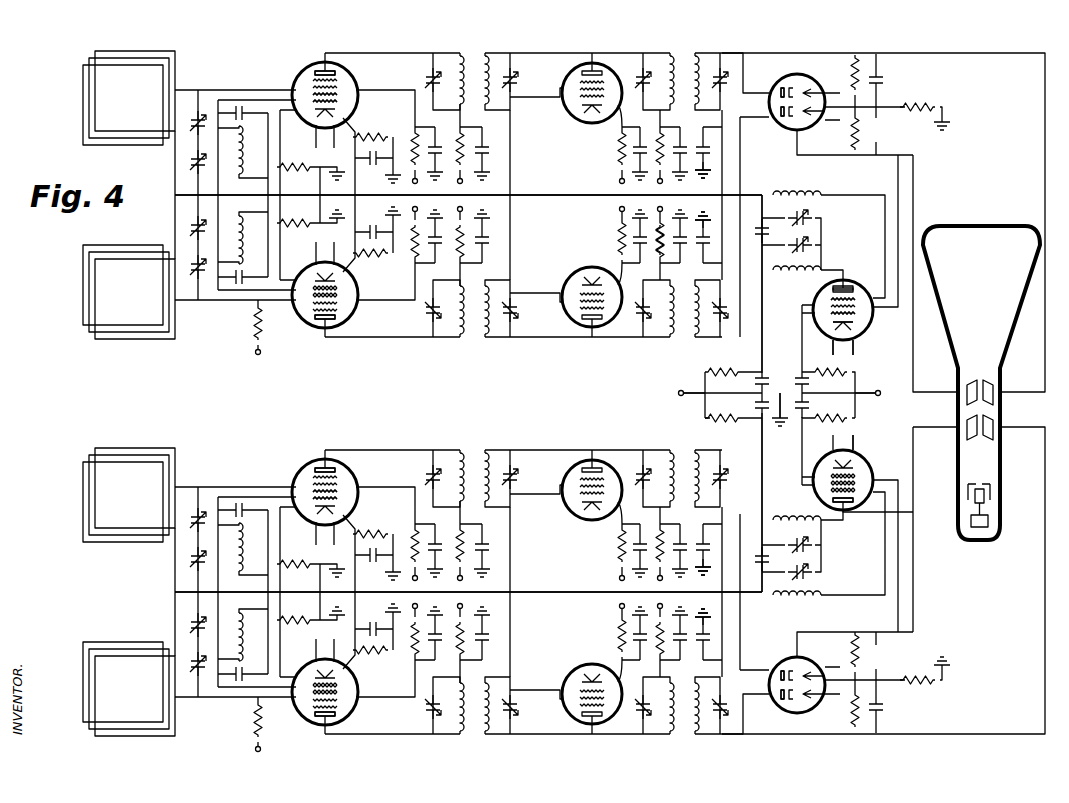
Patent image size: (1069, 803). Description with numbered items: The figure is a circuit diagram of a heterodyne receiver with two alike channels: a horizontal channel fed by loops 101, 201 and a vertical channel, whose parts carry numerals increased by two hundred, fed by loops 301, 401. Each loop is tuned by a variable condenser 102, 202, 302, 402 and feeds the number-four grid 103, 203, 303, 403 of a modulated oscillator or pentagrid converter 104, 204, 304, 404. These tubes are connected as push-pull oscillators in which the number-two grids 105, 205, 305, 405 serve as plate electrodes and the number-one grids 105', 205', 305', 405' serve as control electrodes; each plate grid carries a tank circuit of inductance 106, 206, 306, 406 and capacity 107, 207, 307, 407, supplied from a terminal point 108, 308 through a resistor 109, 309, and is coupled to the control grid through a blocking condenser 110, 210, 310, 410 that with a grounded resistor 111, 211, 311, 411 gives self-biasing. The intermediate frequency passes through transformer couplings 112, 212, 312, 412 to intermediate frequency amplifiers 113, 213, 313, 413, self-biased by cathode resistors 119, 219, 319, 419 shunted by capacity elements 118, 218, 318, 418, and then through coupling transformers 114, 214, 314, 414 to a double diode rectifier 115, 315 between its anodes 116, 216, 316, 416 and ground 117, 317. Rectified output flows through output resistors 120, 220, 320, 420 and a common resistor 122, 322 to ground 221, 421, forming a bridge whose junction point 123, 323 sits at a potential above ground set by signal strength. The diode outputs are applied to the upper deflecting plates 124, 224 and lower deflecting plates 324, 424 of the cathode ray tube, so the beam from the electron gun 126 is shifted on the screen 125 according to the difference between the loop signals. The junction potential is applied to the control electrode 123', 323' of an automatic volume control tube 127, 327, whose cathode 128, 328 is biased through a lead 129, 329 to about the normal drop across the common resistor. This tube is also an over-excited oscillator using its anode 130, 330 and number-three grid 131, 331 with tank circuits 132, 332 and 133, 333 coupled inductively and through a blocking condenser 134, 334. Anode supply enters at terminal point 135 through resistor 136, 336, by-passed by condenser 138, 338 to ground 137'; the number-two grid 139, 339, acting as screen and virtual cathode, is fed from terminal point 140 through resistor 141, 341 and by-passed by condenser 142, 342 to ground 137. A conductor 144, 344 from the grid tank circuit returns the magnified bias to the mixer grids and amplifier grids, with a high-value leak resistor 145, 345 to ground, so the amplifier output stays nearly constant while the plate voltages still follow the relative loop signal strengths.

The loop 101 is at (83, 87).
The variable condenser 102 is at (195, 121).
The No. 4 grid 103 is at (300, 78).
The modulated oscillator 104 is at (343, 74).
The No. 2 grid 105 is at (352, 100).
The No. 1 grid 105' is at (353, 110).
The inductance element 106 is at (256, 150).
The capacity element 107 is at (196, 160).
The terminal point 108 is at (262, 352).
The resistor 109 is at (262, 328).
The blocking or coupling condenser 110 is at (243, 118).
The resistor 111 is at (308, 160).
The transformer coupling 112 is at (471, 53).
The intermediate frequency amplifier 113 is at (578, 66).
The coupling transformer 114 is at (683, 53).
The double diode rectifier 115 is at (812, 80).
The anode electrode 116 is at (775, 85).
The ground 117 is at (703, 176).
The capacity element 118 is at (640, 136).
The resistor element 119 is at (618, 155).
The output resistor 120 is at (855, 62).
The common resistor 122 is at (920, 103).
The junction point 123 is at (887, 87).
The control electrode 123' is at (870, 322).
The deflecting plate 124 is at (995, 398).
The target or screen 125 is at (985, 232).
The electron gun structure 126 is at (992, 492).
The automatic volume control tube 127 is at (818, 322).
The cathode 128 is at (833, 340).
The conductor or lead 129 is at (860, 348).
The plate or anode electrode 130 is at (852, 283).
The No. 3 grid 131 is at (833, 289).
The tank circuit 132 is at (821, 262).
The tank circuit 133 is at (821, 212).
The blocking condenser 134 is at (812, 243).
The terminal point 135 is at (678, 396).
The resistor 136 is at (731, 361).
The ground 137 is at (672, 250).
The ground 137' is at (781, 424).
The condenser 138 is at (758, 390).
The No. 2 grid 139 is at (815, 300).
The terminal point 140 is at (882, 399).
The resistor 141 is at (852, 372).
The condenser 142 is at (810, 386).
The conductor 144 is at (762, 195).
The resistor 145 is at (706, 245).
The loop 201 is at (83, 287).
The variable condenser 202 is at (194, 270).
The No. 4 grid 203 is at (300, 305).
The modulated oscillator 204 is at (350, 312).
The No. 2 grid 205 is at (352, 291).
The No. 1 grid 205' is at (353, 276).
The inductance element 206 is at (230, 240).
The capacity element 207 is at (196, 230).
The blocking or coupling condenser 210 is at (245, 285).
The resistor 211 is at (308, 220).
The transformer coupling 212 is at (477, 337).
The intermediate frequency amplifier 213 is at (578, 330).
The coupling transformer 214 is at (680, 337).
The anode electrode 216 is at (778, 125).
The capacity element 218 is at (640, 254).
The resistor element 219 is at (618, 236).
The output resistor 220 is at (855, 140).
The ground 221 is at (948, 128).
The deflecting plate 224 is at (967, 396).
The loop 301 is at (83, 487).
The variable condenser 302 is at (195, 519).
The No. 4 grid 303 is at (300, 480).
The modulated oscillator 304 is at (343, 473).
The No. 2 grid 305 is at (352, 497).
The No. 1 grid 305' is at (353, 508).
The inductance element 306 is at (243, 545).
The capacity element 307 is at (196, 562).
The terminal point 308 is at (262, 748).
The resistor 309 is at (262, 724).
The blocking or coupling condenser 310 is at (245, 505).
The resistor 311 is at (295, 566).
The transformer coupling 312 is at (471, 450).
The intermediate frequency amplifier 313 is at (578, 464).
The coupling transformer 314 is at (683, 450).
The double diode rectifier 315 is at (800, 668).
The anode electrode 316 is at (773, 668).
The ground 317 is at (703, 574).
The capacity element 318 is at (640, 534).
The resistor element 319 is at (618, 553).
The output resistor 320 is at (855, 640).
The common resistor 322 is at (930, 684).
The junction point 323 is at (886, 702).
The control electrode 323' is at (811, 480).
The deflecting plate 324 is at (993, 432).
The automatic volume control tube 327 is at (913, 512).
The cathode 328 is at (832, 455).
The conductor or lead 329 is at (858, 448).
The plate or anode electrode 330 is at (843, 512).
The No. 3 grid 331 is at (815, 491).
The tank circuit 332 is at (821, 530).
The tank circuit 333 is at (821, 585).
The blocking condenser 334 is at (812, 570).
The resistor 336 is at (726, 422).
The condenser 338 is at (770, 393).
The No. 2 grid 339 is at (868, 472).
The resistor 341 is at (828, 421).
The condenser 342 is at (810, 406).
The conductor 344 is at (762, 596).
The resistor 345 is at (706, 640).
The loop 401 is at (125, 641).
The variable condenser 402 is at (194, 666).
The No. 4 grid 403 is at (300, 702).
The modulated oscillator 404 is at (350, 708).
The No. 2 grid 405 is at (352, 683).
The No. 1 grid 405' is at (353, 671).
The inductance element 406 is at (230, 640).
The capacity element 407 is at (196, 624).
The blocking or coupling condenser 410 is at (240, 680).
The resistor 411 is at (295, 617).
The transformer coupling 412 is at (474, 734).
The intermediate frequency amplifier 413 is at (580, 720).
The coupling transformer 414 is at (681, 734).
The anode electrode 416 is at (772, 706).
The capacity element 418 is at (640, 650).
The resistor element 419 is at (618, 638).
The output resistor 420 is at (850, 718).
The ground 421 is at (948, 662).
The deflecting plate 424 is at (967, 430).